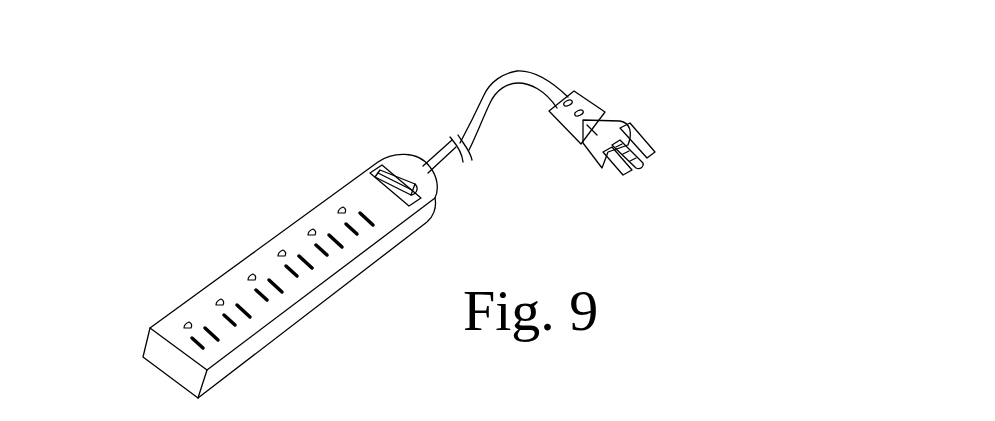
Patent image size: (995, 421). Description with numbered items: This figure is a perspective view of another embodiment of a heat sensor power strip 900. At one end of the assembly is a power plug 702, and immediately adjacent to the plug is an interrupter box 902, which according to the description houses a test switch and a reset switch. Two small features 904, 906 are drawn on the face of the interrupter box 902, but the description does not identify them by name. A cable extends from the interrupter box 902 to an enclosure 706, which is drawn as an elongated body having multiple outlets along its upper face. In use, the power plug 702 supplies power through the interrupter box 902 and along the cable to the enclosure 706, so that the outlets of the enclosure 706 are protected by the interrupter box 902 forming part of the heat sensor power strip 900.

The heat sensor power strip 900 is at (112, 88).
The enclosure 706 is at (226, 273).
The interrupter box 902 is at (572, 140).
The indicator aperture 904 is at (566, 98).
The indicator aperture 906 is at (582, 109).
The power plug 702 is at (619, 116).